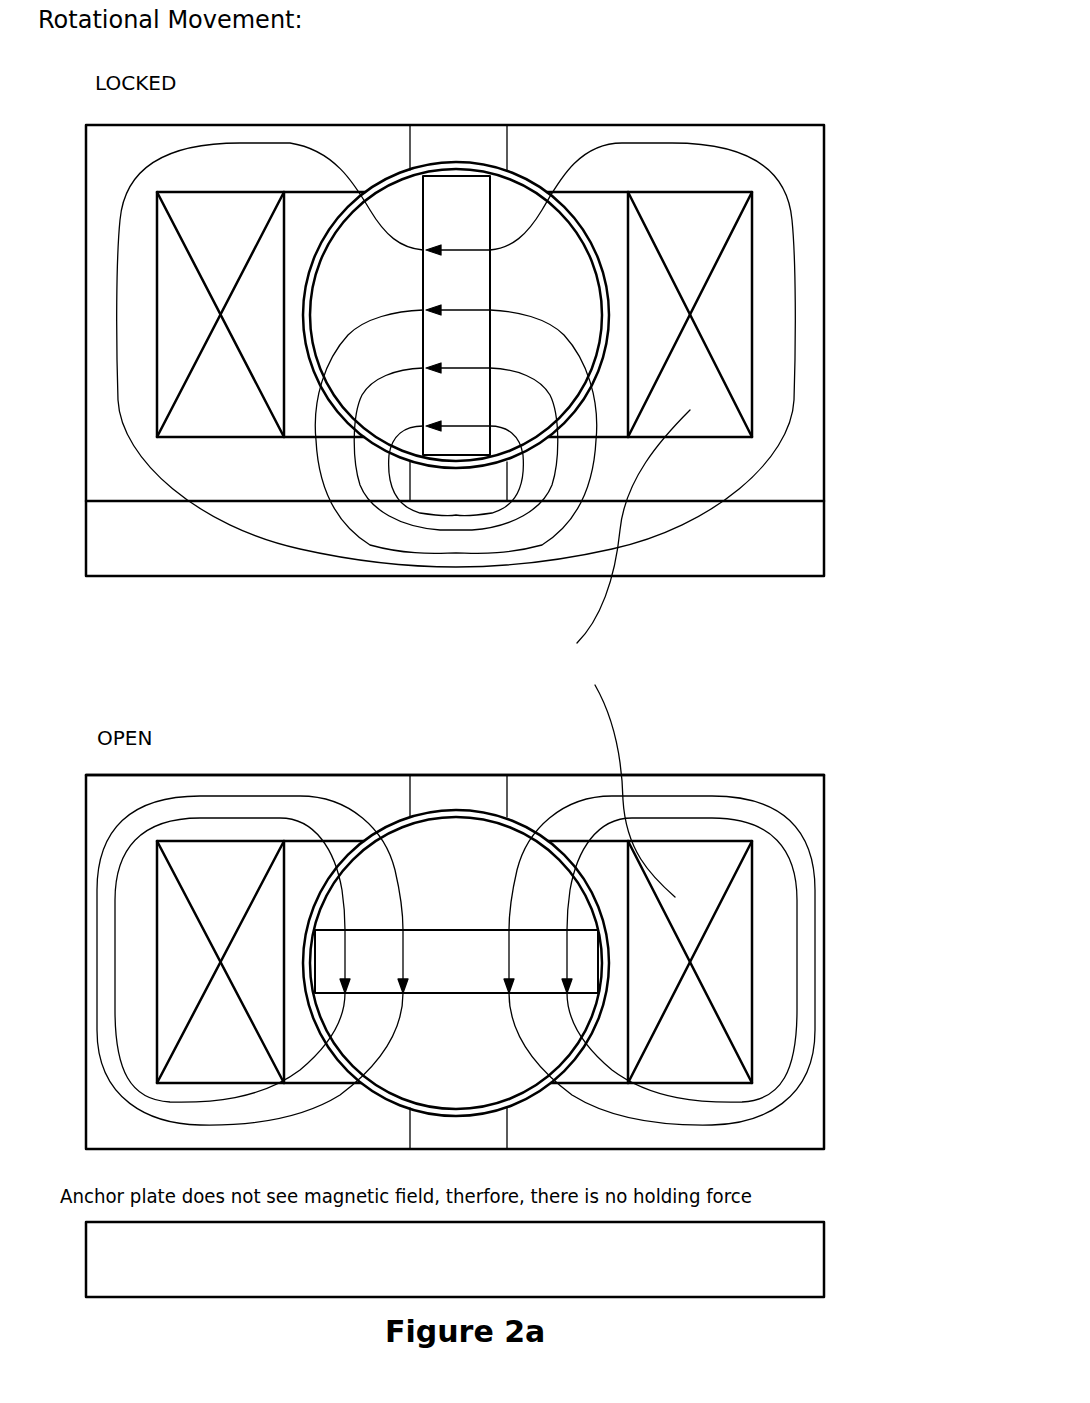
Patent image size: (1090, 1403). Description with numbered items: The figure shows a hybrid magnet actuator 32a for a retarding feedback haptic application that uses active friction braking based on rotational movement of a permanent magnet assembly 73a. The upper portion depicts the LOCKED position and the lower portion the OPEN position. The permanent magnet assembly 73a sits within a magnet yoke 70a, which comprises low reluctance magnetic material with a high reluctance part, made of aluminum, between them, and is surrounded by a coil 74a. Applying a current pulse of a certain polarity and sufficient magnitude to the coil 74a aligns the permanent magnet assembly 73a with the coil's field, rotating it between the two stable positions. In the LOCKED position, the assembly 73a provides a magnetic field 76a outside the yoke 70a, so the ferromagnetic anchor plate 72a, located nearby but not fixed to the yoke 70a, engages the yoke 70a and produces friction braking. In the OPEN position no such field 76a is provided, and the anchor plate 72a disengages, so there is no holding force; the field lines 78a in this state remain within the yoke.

The hybrid magnet actuator 32a is at (800, 110).
The magnet yoke 70a is at (790, 452).
The anchor plate 72a is at (783, 528).
The permanent magnet assembly 73a is at (421, 200).
The coil 74a is at (675, 228).
The magnetic field 76a is at (693, 522).
The magnetic flux loop in open state 78a is at (738, 1117).